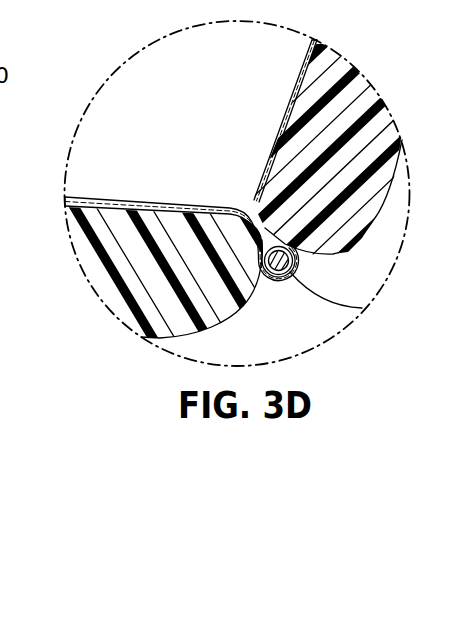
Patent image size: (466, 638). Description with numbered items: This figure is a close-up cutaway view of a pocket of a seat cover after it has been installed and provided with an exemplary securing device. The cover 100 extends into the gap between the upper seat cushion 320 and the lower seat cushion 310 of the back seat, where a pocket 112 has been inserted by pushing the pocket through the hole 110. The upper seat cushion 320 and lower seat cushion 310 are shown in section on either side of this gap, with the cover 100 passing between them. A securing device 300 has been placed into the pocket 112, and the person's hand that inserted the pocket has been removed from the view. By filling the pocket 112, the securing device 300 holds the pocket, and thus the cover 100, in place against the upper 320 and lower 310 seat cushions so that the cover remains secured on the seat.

The cover 100 is at (187, 189).
The hole 110 is at (250, 207).
The pocket 112 is at (259, 250).
The securing device 300 is at (362, 308).
The lower seat cushion 310 is at (123, 297).
The upper seat cushion 320 is at (345, 68).